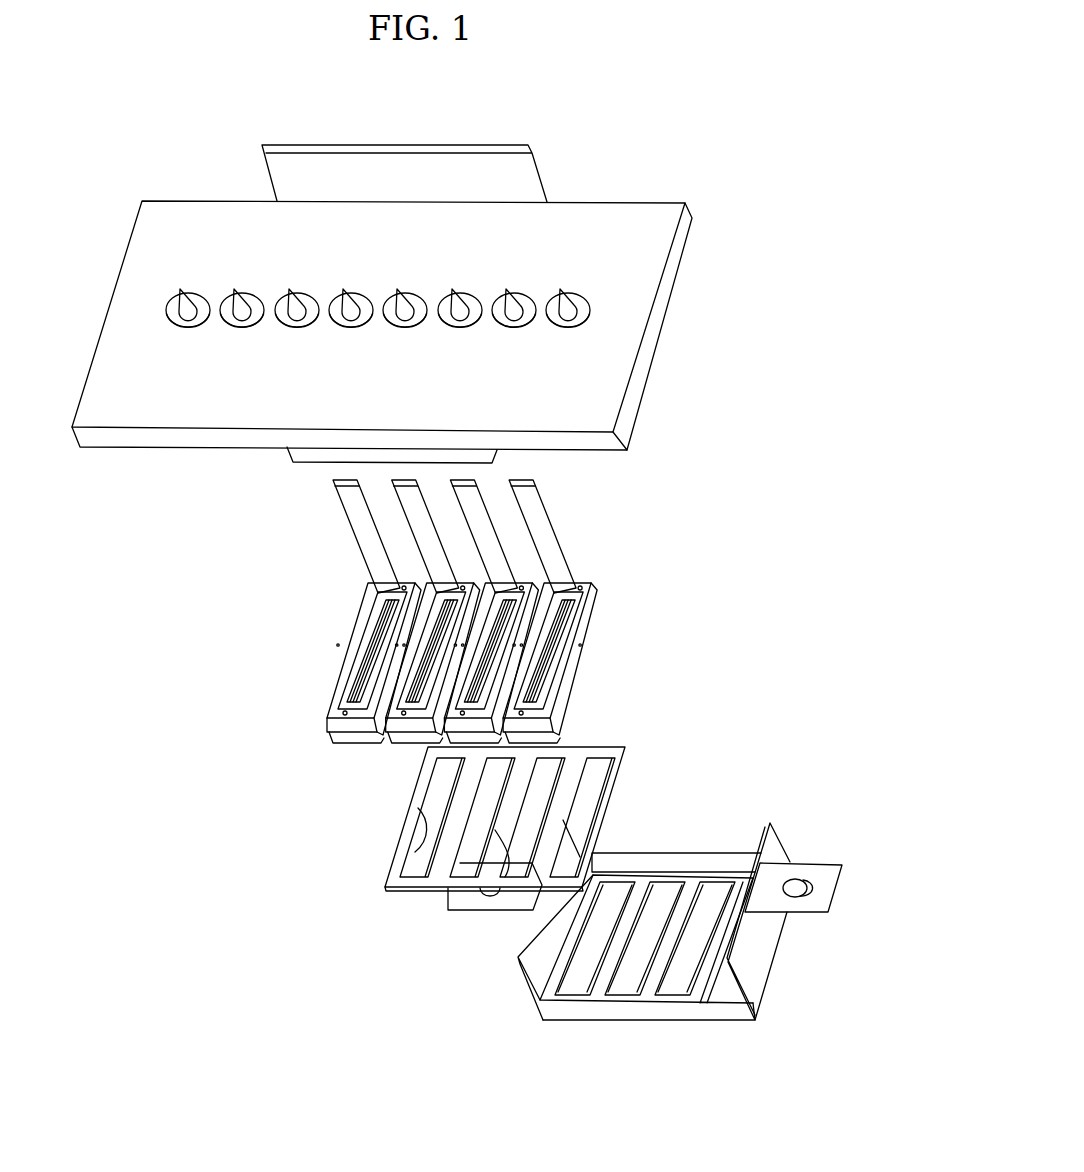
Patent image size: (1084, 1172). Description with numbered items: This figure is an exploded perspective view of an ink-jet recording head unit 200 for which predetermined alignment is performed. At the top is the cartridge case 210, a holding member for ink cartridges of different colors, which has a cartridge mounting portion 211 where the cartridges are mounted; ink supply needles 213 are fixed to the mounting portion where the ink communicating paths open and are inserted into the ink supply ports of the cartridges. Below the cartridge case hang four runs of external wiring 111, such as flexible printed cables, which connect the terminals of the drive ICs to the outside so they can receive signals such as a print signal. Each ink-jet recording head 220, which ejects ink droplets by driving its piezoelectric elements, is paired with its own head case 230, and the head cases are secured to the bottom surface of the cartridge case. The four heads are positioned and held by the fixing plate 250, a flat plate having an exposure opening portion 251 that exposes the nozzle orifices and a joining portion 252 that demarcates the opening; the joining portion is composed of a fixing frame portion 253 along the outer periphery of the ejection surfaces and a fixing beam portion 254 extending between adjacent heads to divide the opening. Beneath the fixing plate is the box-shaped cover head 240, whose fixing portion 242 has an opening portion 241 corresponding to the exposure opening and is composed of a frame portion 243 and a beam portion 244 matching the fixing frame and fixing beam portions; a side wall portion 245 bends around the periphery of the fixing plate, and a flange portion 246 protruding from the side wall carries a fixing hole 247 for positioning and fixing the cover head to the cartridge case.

The ink-jet recording head unit 200 is at (710, 160).
The cartridge case 210 is at (662, 307).
The cartridge mounting portion 211 is at (540, 378).
The ink supply needles 213 is at (565, 305).
The external wiring 111 is at (358, 523).
The ink-jet recording head 220 is at (591, 673).
The head case 230 is at (573, 622).
The fixing plate 250 is at (649, 739).
The exposure opening portion 251 is at (424, 812).
The joining portion 252 is at (417, 1010).
The fixing frame portion 253 is at (493, 830).
The fixing beam portion 254 is at (512, 862).
The cover head 240 is at (807, 809).
The opening portion 241 is at (590, 937).
The fixing portion 242 is at (757, 848).
The frame portion 243 is at (627, 873).
The beam portion 244 is at (680, 928).
The side wall portion 245 is at (695, 1012).
The flange portion 246 is at (797, 907).
The fixing hole 247 is at (803, 880).